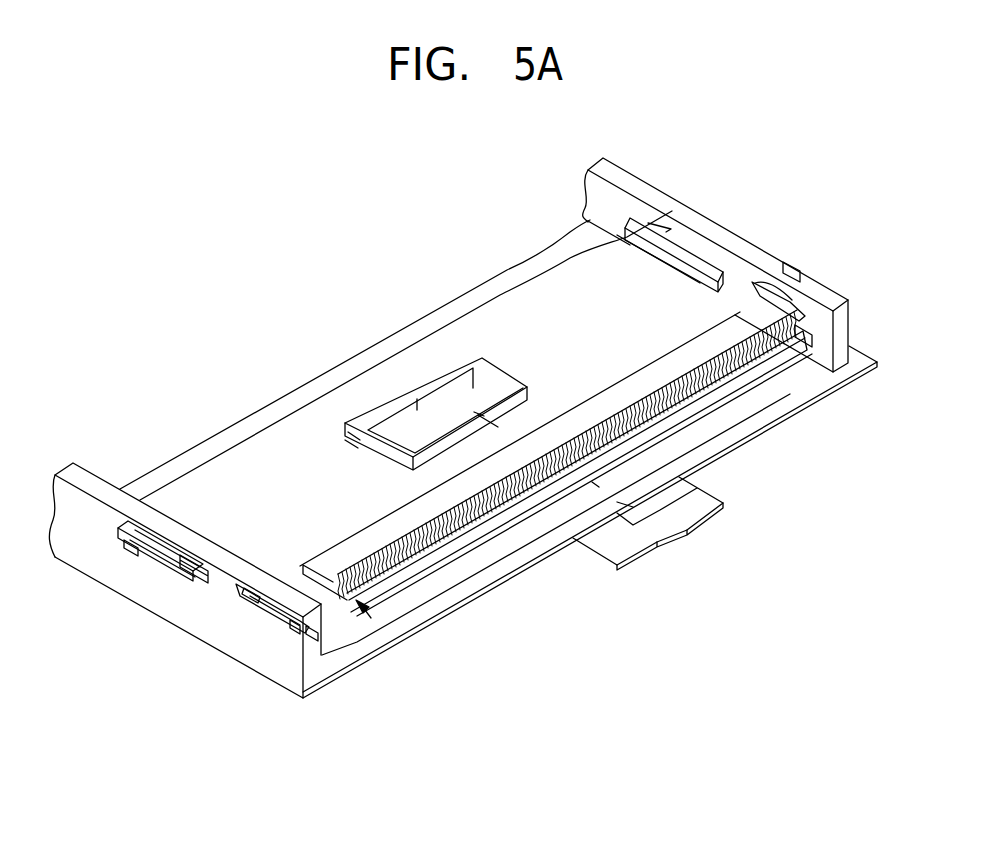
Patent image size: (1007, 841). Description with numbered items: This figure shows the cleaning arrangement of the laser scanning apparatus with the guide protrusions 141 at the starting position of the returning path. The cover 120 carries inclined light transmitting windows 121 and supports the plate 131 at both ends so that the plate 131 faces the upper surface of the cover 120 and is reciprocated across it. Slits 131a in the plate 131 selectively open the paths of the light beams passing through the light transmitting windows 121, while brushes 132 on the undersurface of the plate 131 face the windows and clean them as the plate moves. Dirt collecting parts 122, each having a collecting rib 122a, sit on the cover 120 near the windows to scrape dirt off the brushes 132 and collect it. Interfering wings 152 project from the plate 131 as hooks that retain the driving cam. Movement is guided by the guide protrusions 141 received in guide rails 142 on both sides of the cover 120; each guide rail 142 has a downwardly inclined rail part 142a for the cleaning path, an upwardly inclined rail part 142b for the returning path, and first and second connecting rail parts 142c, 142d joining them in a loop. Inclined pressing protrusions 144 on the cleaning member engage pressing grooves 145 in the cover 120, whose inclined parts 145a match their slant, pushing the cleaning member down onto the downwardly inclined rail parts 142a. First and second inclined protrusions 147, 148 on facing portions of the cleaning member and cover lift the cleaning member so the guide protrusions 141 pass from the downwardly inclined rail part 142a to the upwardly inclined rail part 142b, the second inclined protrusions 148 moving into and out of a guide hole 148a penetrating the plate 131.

The cover 120 is at (624, 174).
The light transmitting windows 121 is at (703, 343).
The dirt collecting parts 122 is at (374, 615).
The collecting rib 122a is at (392, 612).
The plate 131 is at (642, 263).
The slits 131a is at (797, 343).
The brushes 132 is at (801, 270).
The guide protrusions 141 is at (290, 628).
The guide rails 142 is at (762, 282).
The downwardly inclined rail part 142a is at (262, 621).
The upwardly inclined rail part 142b is at (294, 630).
The first connecting rail part 142c is at (313, 636).
The second connecting rail part 142d is at (252, 594).
The pressing protrusions 144 is at (182, 558).
The pressing grooves 145 is at (150, 553).
The inclined parts 145a is at (128, 547).
The first inclined protrusions 147 is at (455, 352).
The second inclined protrusions 148 is at (409, 377).
The guide hole 148a is at (402, 442).
The interfering wings 152 is at (678, 518).